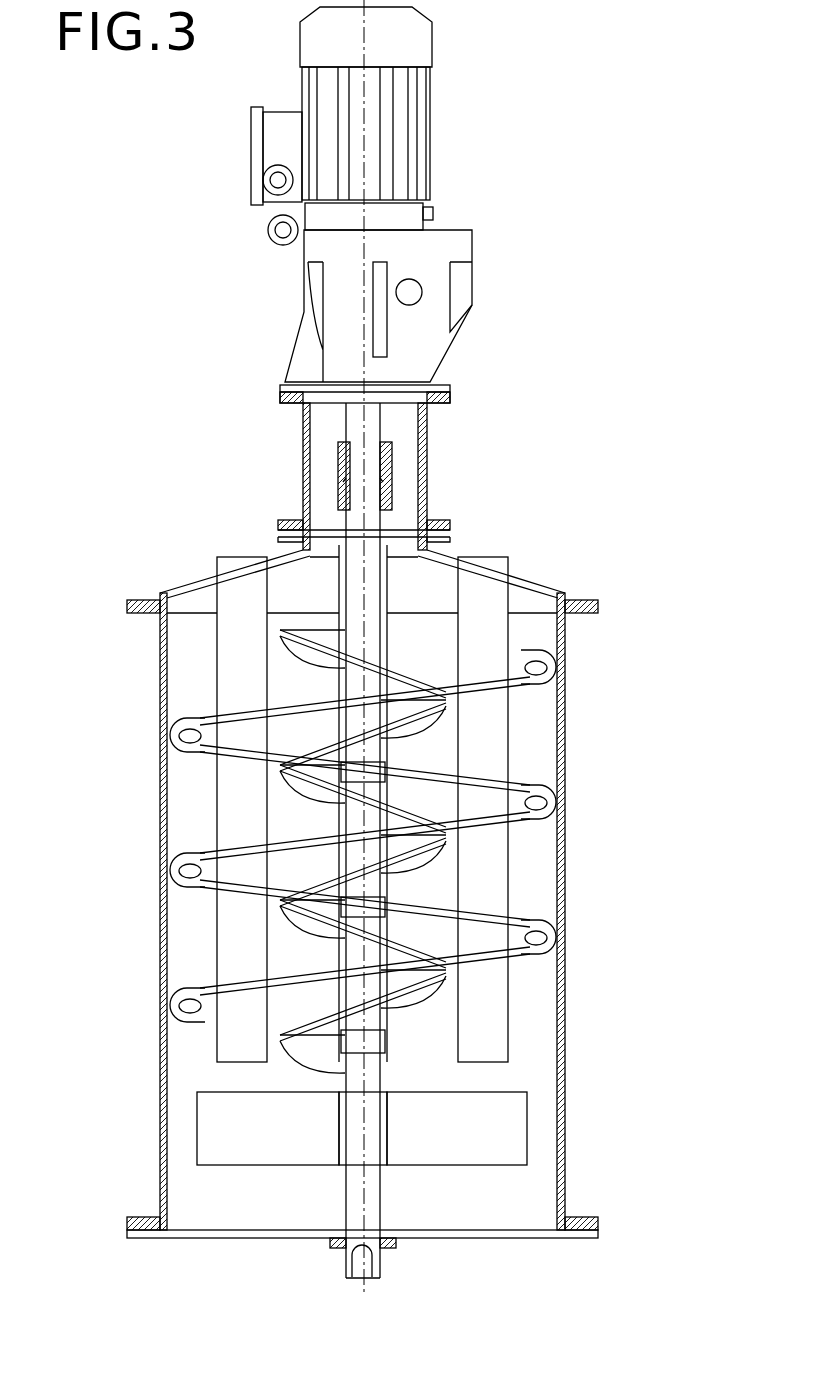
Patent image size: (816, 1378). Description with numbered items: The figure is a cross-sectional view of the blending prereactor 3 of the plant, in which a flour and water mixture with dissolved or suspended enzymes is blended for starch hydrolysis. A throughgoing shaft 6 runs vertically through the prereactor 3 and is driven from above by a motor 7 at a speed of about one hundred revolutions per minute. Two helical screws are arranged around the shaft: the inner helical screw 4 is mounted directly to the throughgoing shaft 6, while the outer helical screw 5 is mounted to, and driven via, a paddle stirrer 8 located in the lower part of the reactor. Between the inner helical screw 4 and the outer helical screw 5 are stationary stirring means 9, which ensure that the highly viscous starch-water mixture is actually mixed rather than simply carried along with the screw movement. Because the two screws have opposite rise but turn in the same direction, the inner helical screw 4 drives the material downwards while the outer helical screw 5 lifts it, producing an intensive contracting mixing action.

The prereactor 3 is at (565, 1020).
The inner helical screw 4 is at (415, 993).
The outer helical screw 5 is at (190, 1015).
The throughgoing shaft 6 is at (350, 1073).
The motor 7 is at (412, 148).
The paddle stirrer 8 is at (264, 1153).
The stationary stirring means 9 is at (487, 855).